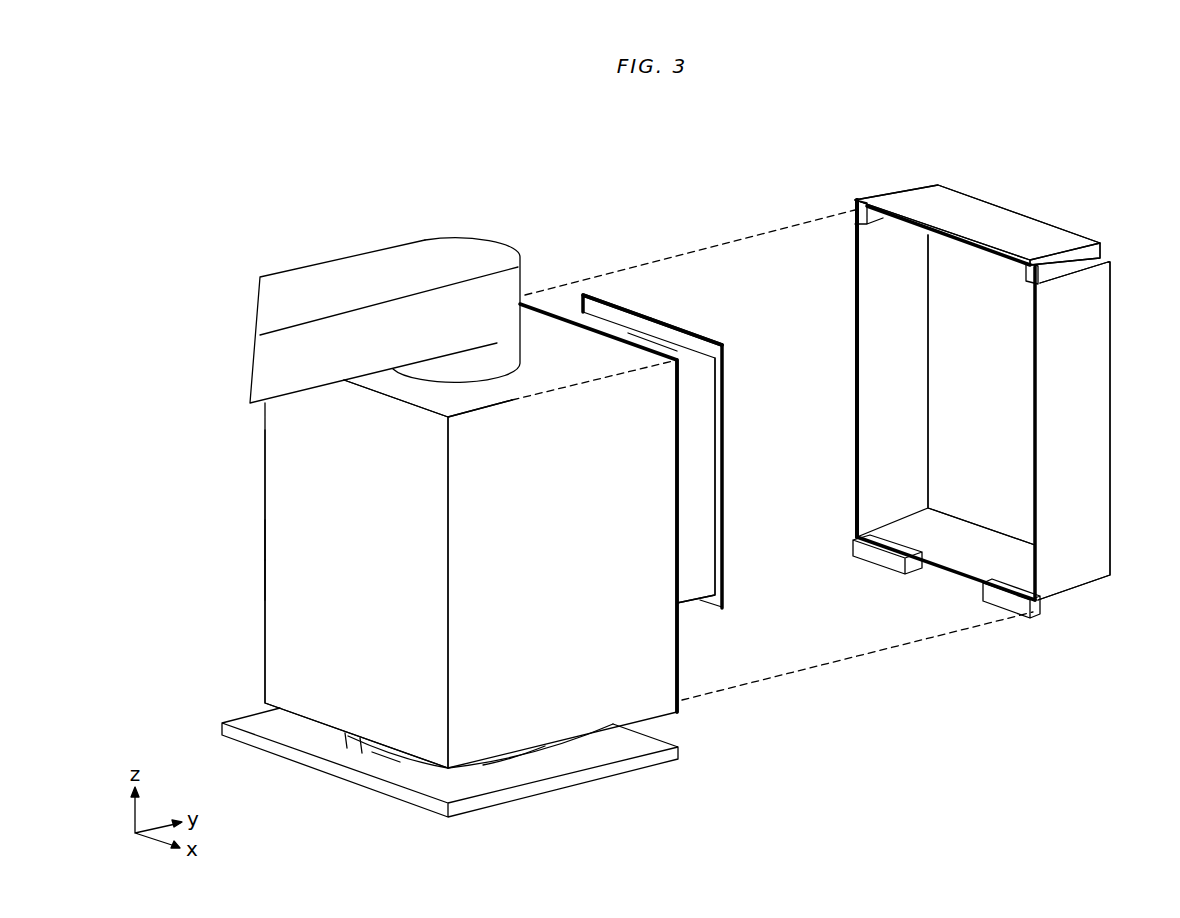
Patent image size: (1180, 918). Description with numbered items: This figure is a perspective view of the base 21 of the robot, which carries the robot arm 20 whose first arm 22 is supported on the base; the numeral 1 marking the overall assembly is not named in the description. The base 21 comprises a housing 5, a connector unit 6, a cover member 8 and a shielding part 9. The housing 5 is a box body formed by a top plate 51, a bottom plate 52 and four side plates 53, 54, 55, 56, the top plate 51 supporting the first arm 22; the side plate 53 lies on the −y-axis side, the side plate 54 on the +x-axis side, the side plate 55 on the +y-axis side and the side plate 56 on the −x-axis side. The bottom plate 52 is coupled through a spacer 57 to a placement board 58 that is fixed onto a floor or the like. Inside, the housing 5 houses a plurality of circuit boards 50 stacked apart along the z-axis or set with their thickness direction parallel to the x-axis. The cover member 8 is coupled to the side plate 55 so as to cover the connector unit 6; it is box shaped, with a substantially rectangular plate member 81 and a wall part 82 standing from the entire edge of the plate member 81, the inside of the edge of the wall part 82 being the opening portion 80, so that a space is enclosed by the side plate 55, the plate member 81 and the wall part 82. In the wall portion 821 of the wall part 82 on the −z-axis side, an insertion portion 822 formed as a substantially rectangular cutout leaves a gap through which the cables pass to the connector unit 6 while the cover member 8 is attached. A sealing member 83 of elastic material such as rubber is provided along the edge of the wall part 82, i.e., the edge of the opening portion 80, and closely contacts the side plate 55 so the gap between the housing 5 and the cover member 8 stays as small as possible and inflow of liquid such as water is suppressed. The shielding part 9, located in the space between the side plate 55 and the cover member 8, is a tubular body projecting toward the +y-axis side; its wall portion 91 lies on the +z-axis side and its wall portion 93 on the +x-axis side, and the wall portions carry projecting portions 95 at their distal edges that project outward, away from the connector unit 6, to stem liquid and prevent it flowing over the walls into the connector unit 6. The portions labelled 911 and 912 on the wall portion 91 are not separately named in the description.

The coil component 1 is at (829, 170).
The housing 5 is at (660, 715).
The connector unit 6 is at (622, 502).
The cover member 8 is at (988, 218).
The shielding part 9 is at (700, 430).
The robot arm 20 is at (356, 252).
The base 21 is at (265, 547).
The first arm 22 is at (443, 260).
The circuit boards 50 is at (320, 458).
The top plate 51 is at (553, 347).
The bottom plate 52 is at (348, 735).
The side plate 53 is at (308, 617).
The side plate 54 is at (583, 693).
The side plate 55 is at (682, 658).
The side plate 56 is at (265, 488).
The spacer 57 is at (380, 755).
The placement board 58 is at (535, 773).
The opening portion 80 is at (892, 327).
The plate member 81 is at (998, 400).
The wall part 82 is at (1073, 467).
The sealing member 83 is at (1043, 305).
The wall portion 91 is at (718, 196).
The wall portion 93 is at (697, 535).
The projecting portions 95 is at (727, 378).
The wall portion 821 is at (918, 528).
The insertion portion 822 is at (958, 573).
The bar portion 911 is at (668, 343).
The bar portion 912 is at (607, 327).